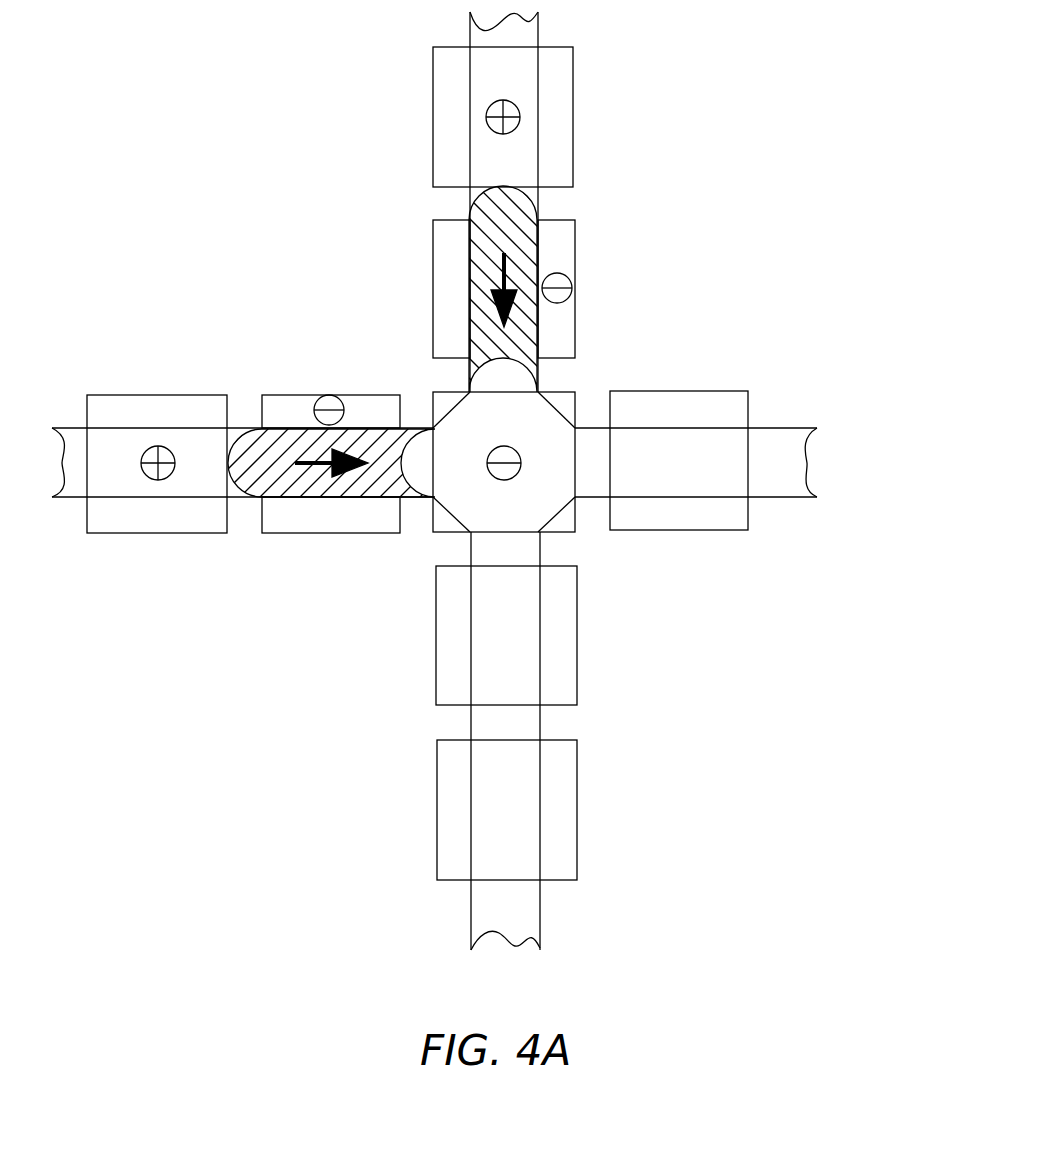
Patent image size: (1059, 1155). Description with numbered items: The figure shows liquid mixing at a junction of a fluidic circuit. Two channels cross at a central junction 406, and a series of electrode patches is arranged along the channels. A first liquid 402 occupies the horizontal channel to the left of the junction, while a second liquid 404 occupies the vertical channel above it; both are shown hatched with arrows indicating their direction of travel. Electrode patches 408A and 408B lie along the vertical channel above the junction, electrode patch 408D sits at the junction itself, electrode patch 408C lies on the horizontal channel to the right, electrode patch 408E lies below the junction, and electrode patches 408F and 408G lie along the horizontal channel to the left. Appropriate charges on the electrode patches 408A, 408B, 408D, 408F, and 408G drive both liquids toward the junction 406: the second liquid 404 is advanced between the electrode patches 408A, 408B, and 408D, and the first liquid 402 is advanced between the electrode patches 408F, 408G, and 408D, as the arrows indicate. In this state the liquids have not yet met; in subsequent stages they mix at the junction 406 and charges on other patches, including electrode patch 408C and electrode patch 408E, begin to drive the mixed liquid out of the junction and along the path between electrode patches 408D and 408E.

The first liquid 402 is at (350, 428).
The second liquid 404 is at (469, 306).
The junction 406 is at (458, 423).
The electrode patch 408A is at (573, 115).
The electrode patch 408B is at (575, 288).
The electrode patch 408C is at (680, 391).
The electrode patch 408D is at (575, 532).
The electrode patch 408E is at (577, 634).
The electrode patch 408F is at (577, 808).
The electrode patch 408G is at (331, 533).